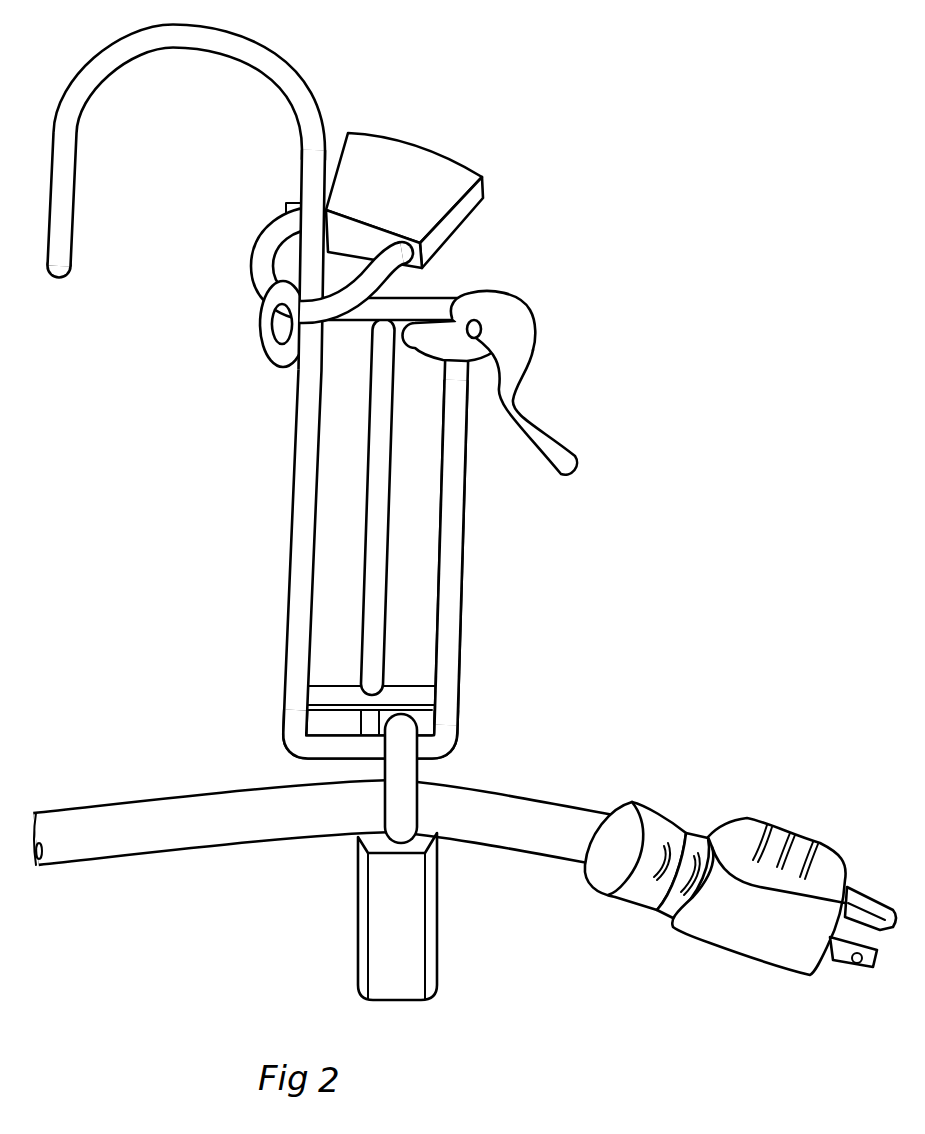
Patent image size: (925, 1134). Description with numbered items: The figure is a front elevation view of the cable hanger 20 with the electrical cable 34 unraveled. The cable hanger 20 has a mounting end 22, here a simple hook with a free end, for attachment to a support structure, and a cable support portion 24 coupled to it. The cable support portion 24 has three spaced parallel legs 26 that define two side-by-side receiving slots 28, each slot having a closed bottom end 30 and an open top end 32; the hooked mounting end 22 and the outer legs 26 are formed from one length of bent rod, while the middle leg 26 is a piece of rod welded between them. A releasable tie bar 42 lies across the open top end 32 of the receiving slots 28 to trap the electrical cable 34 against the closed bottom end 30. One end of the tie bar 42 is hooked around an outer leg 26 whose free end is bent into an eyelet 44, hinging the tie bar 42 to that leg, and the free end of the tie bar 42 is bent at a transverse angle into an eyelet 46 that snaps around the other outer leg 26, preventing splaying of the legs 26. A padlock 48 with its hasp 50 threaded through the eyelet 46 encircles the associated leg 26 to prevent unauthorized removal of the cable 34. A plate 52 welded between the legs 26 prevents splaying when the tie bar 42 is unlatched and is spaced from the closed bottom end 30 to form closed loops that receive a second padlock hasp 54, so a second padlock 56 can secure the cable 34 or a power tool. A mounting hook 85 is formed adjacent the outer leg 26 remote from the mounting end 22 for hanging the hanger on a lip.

The cable hanger 20 is at (116, 475).
The mounting end 22 is at (226, 22).
The cable support portion 24 is at (514, 548).
The legs 26 is at (301, 647).
The receiving slots 28 is at (353, 547).
The closed bottom end 30 is at (424, 742).
The open top end 32 is at (334, 404).
The electrical cable 34 is at (103, 806).
The tie bar 42 is at (432, 293).
The eyelet 44 is at (519, 352).
The eyelet 46 is at (272, 332).
The padlock 48 is at (403, 166).
The hasp 50 is at (278, 228).
The plate 52 is at (430, 705).
The second padlock hasp 54 is at (392, 803).
The second padlock 56 is at (428, 984).
The mounting hook 85 is at (546, 438).